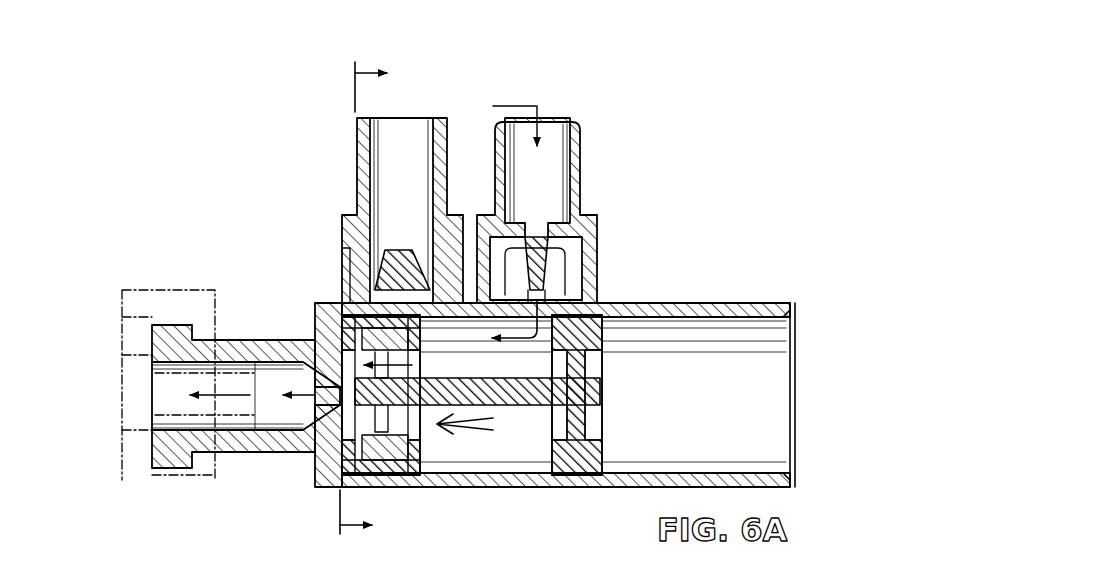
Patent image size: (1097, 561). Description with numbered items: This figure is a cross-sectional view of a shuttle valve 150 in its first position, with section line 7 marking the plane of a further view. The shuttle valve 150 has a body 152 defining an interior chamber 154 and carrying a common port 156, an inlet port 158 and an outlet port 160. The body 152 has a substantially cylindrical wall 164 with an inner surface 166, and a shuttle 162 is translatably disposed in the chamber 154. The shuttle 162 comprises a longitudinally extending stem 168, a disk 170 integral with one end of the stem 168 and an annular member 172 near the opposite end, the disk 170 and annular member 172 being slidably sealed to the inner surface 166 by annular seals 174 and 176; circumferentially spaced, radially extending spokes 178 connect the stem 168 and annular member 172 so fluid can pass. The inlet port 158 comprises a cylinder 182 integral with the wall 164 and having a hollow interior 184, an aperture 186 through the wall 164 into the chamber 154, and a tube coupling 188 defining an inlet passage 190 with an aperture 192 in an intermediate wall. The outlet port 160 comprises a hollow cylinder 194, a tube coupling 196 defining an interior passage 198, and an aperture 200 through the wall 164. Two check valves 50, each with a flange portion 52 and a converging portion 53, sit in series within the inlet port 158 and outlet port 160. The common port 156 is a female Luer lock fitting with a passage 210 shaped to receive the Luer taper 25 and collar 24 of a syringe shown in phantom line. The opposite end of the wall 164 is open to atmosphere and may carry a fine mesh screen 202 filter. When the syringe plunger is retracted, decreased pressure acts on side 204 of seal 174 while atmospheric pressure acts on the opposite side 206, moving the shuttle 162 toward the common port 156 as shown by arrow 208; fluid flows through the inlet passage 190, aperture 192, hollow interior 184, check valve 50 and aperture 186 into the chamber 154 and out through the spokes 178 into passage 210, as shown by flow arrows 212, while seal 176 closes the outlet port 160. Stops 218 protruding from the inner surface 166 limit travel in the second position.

The section line 7- 7 is at (347, 307).
The collar 24 is at (188, 290).
The Luer taper 25 is at (130, 352).
The check valve 50 is at (383, 250).
The flange portion 52 is at (578, 240).
The converging portion 53 is at (383, 290).
The shuttle valve 150 is at (739, 104).
The body 152 is at (583, 371).
The interior chamber 154 is at (732, 405).
The common port 156 is at (170, 320).
The inlet port 158 is at (582, 139).
The outlet port 160 is at (357, 141).
The shuttle 162 is at (604, 372).
The substantially cylindrical wall 164 is at (738, 306).
The inner surface 166 is at (672, 474).
The stem 168 is at (437, 378).
The disk 170 is at (600, 406).
The annular member 172 is at (413, 417).
The annular seal 174 is at (576, 422).
The annular seal 176 is at (358, 472).
The spokes 178 is at (390, 420).
The cylinder 182 is at (590, 248).
The hollow interior 184 is at (562, 288).
The aperture 186 is at (606, 306).
The tube coupling 188 is at (582, 166).
The inlet passage 190 is at (542, 118).
The aperture 192 is at (545, 222).
The hollow cylinder 194 is at (342, 260).
The tube coupling 196 is at (357, 166).
The interior passage 198 is at (393, 140).
The aperture 200 is at (358, 290).
The fine mesh screen 202 is at (796, 424).
The side of seal 204 is at (548, 468).
The opposite side of seal 206 is at (603, 468).
The arrow 208 is at (488, 445).
The passage 210 is at (160, 428).
The flow arrows 212 is at (227, 397).
The stops 218 is at (784, 312).